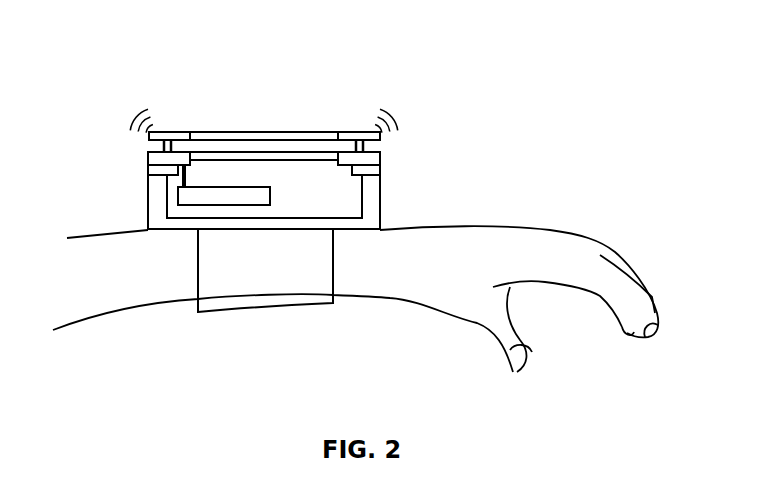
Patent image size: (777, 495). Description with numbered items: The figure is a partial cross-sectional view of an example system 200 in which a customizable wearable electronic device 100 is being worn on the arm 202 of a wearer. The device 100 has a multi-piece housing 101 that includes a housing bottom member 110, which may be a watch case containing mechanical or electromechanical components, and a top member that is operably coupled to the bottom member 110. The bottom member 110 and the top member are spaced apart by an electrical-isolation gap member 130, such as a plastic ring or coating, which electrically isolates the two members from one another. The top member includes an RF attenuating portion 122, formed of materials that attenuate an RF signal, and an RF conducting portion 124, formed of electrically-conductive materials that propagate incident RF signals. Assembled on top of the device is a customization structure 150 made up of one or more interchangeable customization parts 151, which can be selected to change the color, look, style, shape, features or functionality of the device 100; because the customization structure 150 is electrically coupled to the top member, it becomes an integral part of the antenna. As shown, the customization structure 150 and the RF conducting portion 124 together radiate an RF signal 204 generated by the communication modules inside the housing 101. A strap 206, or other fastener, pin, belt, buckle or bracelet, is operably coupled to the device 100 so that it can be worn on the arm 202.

The customizable wearable electronic device 100 is at (413, 62).
The multi-piece housing 101 is at (122, 191).
The housing bottom member 110 is at (404, 195).
The RF attenuating portion 122 is at (320, 161).
The RF conducting portion 124 is at (148, 158).
The electrical-isolation gap member 130 is at (382, 163).
The customization structure 150 is at (265, 115).
The interchangeable customization part 151 is at (347, 132).
The system 200 is at (647, 63).
The arm 202 is at (552, 230).
The RF signal 204 is at (386, 109).
The strap 206 is at (263, 309).